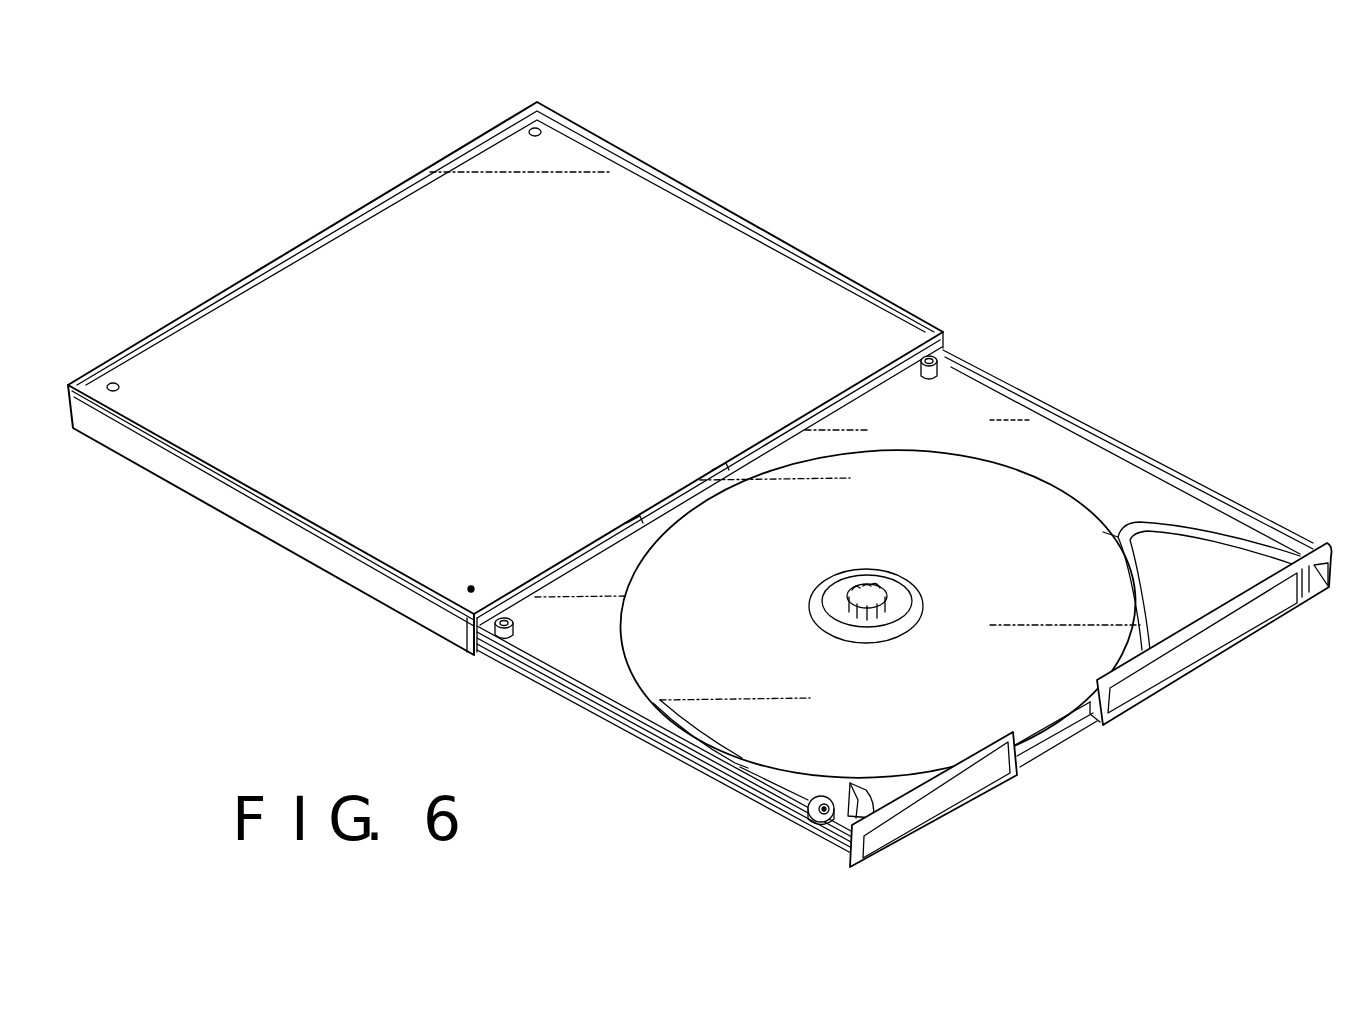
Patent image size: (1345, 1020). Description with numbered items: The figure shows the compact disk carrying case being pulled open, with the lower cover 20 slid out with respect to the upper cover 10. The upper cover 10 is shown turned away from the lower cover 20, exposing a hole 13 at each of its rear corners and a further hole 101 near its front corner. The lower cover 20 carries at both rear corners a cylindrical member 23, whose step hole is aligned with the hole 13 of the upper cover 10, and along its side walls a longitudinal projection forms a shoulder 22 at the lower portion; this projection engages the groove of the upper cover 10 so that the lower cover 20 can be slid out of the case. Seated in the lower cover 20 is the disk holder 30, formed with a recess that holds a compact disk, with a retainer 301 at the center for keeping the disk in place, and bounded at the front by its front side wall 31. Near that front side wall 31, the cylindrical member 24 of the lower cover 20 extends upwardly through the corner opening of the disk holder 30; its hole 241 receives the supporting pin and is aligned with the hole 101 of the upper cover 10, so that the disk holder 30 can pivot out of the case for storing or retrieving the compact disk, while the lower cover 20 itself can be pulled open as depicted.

The upper cover 10 is at (710, 220).
The hole 13 is at (541, 127).
The hole 101 is at (472, 585).
The lower cover 20 is at (1005, 415).
The shoulder 22 is at (550, 692).
The cylindrical member 23 is at (938, 356).
The cylindrical member 24 is at (818, 806).
The hole 241 is at (812, 818).
The disk holder 30 is at (1040, 510).
The retainer 301 is at (890, 585).
The front side wall 31 is at (990, 783).